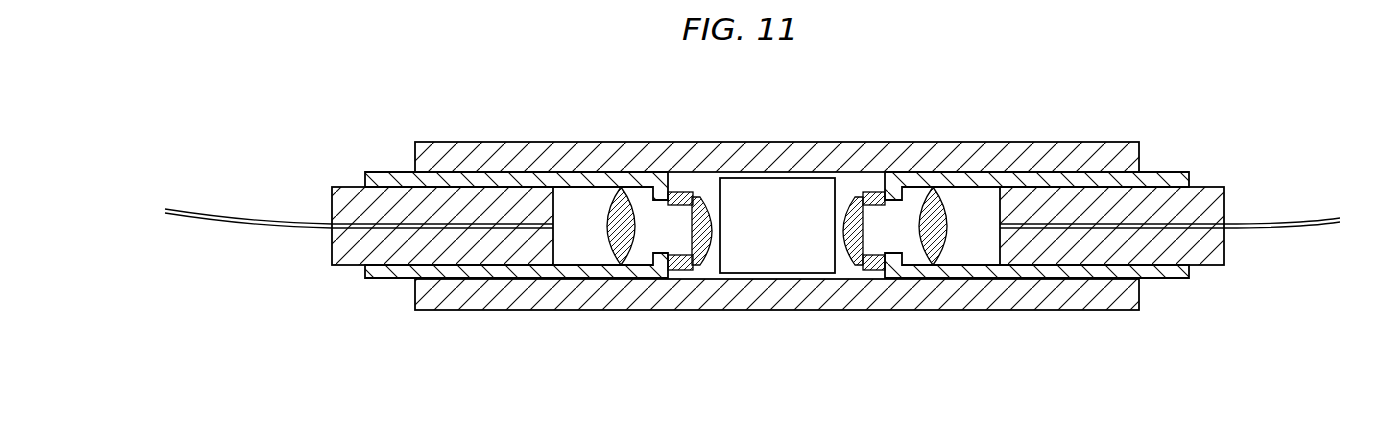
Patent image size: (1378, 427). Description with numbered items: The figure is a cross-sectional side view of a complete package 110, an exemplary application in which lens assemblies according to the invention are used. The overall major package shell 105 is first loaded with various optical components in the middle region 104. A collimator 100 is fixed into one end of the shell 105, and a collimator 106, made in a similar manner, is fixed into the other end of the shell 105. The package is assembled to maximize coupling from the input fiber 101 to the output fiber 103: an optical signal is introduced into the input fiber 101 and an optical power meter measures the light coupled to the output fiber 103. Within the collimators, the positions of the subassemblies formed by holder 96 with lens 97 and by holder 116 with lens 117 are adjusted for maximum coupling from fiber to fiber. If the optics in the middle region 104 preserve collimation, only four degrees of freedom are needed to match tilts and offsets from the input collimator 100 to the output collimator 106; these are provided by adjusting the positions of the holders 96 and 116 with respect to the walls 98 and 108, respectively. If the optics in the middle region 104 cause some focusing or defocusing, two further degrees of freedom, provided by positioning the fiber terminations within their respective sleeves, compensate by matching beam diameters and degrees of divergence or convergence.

The complete package 110 is at (822, 400).
The package shell 105 is at (962, 150).
The collimator 100 is at (516, 227).
The collimator 106 is at (1020, 229).
The wall 98 is at (662, 185).
The holder 96 is at (686, 188).
The lens 97 is at (702, 186).
The middle region 104 is at (773, 265).
The lens 117 is at (845, 186).
The holder 116 is at (878, 187).
The wall 108 is at (894, 180).
The input fiber 101 is at (250, 218).
The output fiber 103 is at (1298, 218).